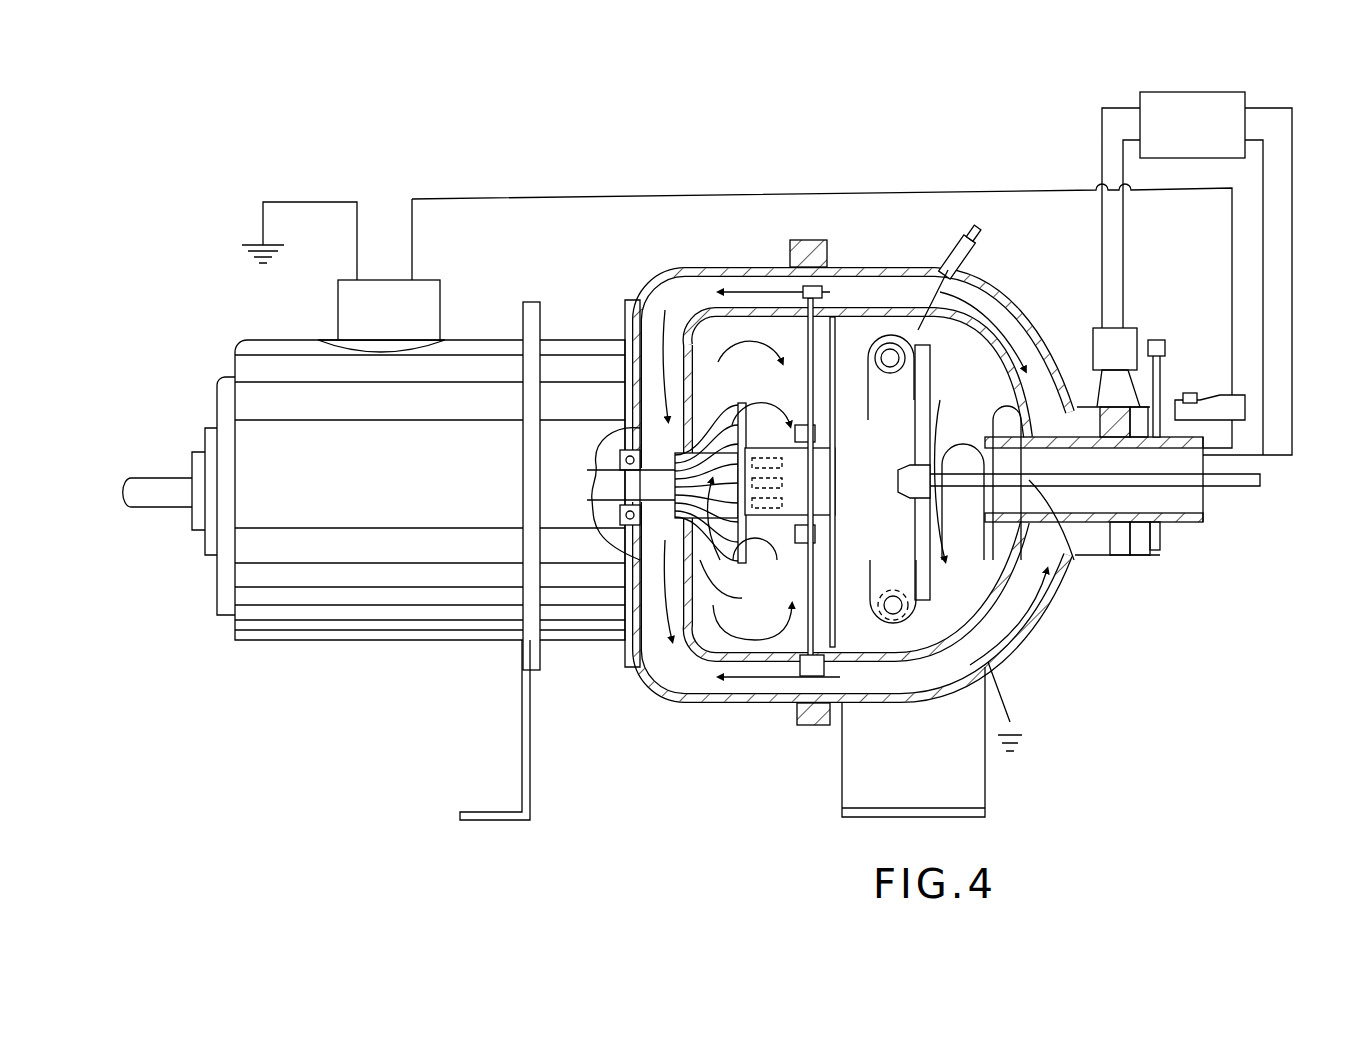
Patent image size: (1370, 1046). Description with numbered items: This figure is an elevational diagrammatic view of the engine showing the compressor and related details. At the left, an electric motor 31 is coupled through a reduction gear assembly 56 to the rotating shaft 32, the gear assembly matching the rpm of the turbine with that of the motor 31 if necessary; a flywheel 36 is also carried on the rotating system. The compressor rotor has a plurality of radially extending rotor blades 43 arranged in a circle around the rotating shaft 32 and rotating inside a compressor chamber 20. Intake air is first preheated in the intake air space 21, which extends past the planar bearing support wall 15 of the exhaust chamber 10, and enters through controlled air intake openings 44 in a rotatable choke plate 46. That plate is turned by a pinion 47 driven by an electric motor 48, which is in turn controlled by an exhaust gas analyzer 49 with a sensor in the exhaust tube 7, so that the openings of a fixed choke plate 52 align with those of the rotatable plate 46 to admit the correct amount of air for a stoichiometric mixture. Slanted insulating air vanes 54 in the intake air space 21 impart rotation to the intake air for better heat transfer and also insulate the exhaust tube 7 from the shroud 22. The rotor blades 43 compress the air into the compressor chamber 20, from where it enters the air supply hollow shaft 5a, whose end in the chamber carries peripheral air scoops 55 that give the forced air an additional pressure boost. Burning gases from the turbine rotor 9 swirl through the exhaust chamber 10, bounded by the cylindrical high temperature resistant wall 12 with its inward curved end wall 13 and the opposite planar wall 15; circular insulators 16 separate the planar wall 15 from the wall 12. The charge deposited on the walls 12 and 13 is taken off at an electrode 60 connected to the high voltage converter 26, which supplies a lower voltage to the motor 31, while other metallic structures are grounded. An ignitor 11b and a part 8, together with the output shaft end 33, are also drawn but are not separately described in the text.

The air supply hollow shaft 5a is at (790, 496).
The exhaust tube 7 is at (1195, 522).
The rotor magnet 8 is at (900, 470).
The turbine rotor 9 is at (930, 420).
The exhaust chamber 10 is at (946, 386).
The electrode 11b is at (978, 244).
The cylindrical high temperature resistant wall 12 is at (1010, 348).
The inward curved end wall 13 is at (1015, 580).
The planar bearing support wall 15 is at (805, 593).
The circular insulator 16 is at (810, 240).
The compressor chamber 20 is at (737, 356).
The intake air space 21 is at (990, 302).
The shroud 22 is at (1045, 348).
The high voltage converter 26 is at (441, 298).
The electric motor 31 is at (362, 493).
The rotating shaft 32 is at (622, 498).
The output shaft 33 is at (168, 505).
The flywheel 36 is at (836, 342).
The compressor rotor blades 43 is at (740, 578).
The air intake openings 44 is at (1158, 548).
The rotatable choke plate 46 is at (1162, 366).
The pinion 47 is at (1162, 342).
The electric motor 48 is at (1138, 328).
The exhaust gas analyzer 49 is at (1172, 92).
The fixed choke plate 52 is at (1138, 548).
The insulating air vanes 54 is at (900, 191).
The peripheral air scoops 55 is at (768, 450).
The reduction gear assembly 56 is at (560, 410).
The electrode 60 is at (1228, 395).